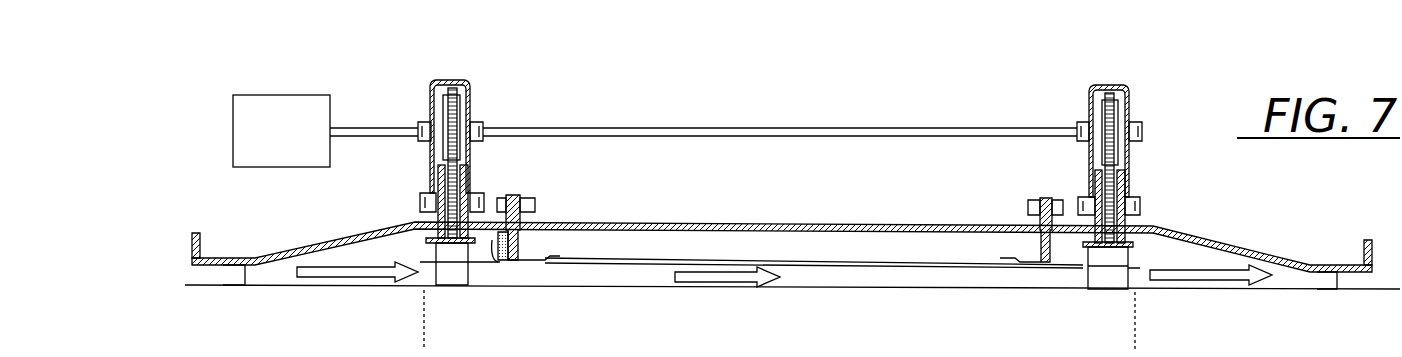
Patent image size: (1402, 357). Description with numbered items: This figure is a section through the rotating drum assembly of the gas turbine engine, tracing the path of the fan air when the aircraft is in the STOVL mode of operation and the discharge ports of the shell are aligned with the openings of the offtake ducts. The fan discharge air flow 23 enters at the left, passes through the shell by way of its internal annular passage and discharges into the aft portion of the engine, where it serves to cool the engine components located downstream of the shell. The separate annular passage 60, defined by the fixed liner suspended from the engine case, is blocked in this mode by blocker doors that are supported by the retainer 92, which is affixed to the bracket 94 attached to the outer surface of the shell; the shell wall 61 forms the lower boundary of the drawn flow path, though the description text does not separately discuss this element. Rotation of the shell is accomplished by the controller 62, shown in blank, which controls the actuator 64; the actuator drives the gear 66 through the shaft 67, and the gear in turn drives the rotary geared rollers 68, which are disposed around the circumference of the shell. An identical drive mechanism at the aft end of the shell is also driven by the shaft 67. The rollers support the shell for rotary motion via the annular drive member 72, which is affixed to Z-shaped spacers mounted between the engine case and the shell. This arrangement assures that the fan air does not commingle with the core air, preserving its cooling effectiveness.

The fan discharge air flow 23 is at (348, 270).
The annular passage 60 is at (665, 245).
The floor 61 is at (606, 283).
The controller 62 is at (283, 95).
The actuator 64 is at (452, 80).
The gear 66 is at (455, 118).
The shaft 67 is at (368, 127).
The rotary geared rollers 68 is at (457, 185).
The annular drive member 72 is at (437, 265).
The retainer 92 is at (512, 262).
The bracket 94 is at (495, 262).